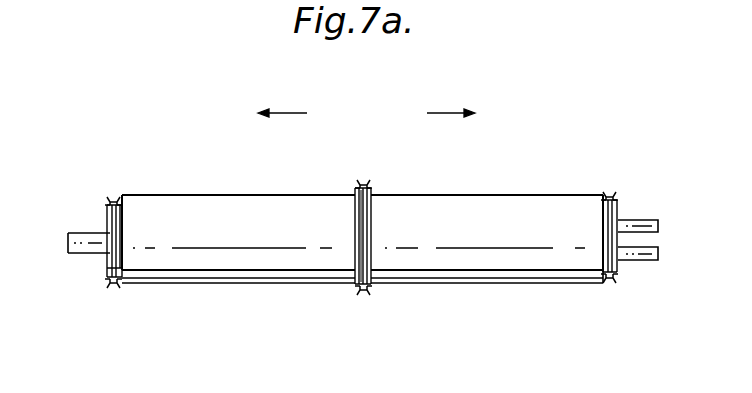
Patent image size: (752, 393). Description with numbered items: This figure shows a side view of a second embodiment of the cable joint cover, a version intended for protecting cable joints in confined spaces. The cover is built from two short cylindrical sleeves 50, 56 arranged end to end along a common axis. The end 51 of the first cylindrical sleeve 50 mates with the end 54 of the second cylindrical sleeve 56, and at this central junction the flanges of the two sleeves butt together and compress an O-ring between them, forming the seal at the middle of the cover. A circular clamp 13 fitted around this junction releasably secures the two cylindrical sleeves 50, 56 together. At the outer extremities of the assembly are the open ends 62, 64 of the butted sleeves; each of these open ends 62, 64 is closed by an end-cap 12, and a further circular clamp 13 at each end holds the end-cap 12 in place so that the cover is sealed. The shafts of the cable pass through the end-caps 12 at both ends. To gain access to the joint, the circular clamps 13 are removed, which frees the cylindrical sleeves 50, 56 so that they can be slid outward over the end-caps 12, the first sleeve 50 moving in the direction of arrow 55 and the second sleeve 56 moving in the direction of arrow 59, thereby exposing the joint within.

The end-cap 12 is at (110, 215).
The circular clamp 13 is at (105, 284).
The cylindrical sleeve 50 is at (257, 205).
The central flange 51 is at (345, 190).
The end 54 is at (373, 253).
The arrow 55 is at (283, 103).
The cylindrical sleeve 56 is at (495, 190).
The arrow 59 is at (451, 103).
The open end 62 is at (130, 218).
The open end 64 is at (596, 205).